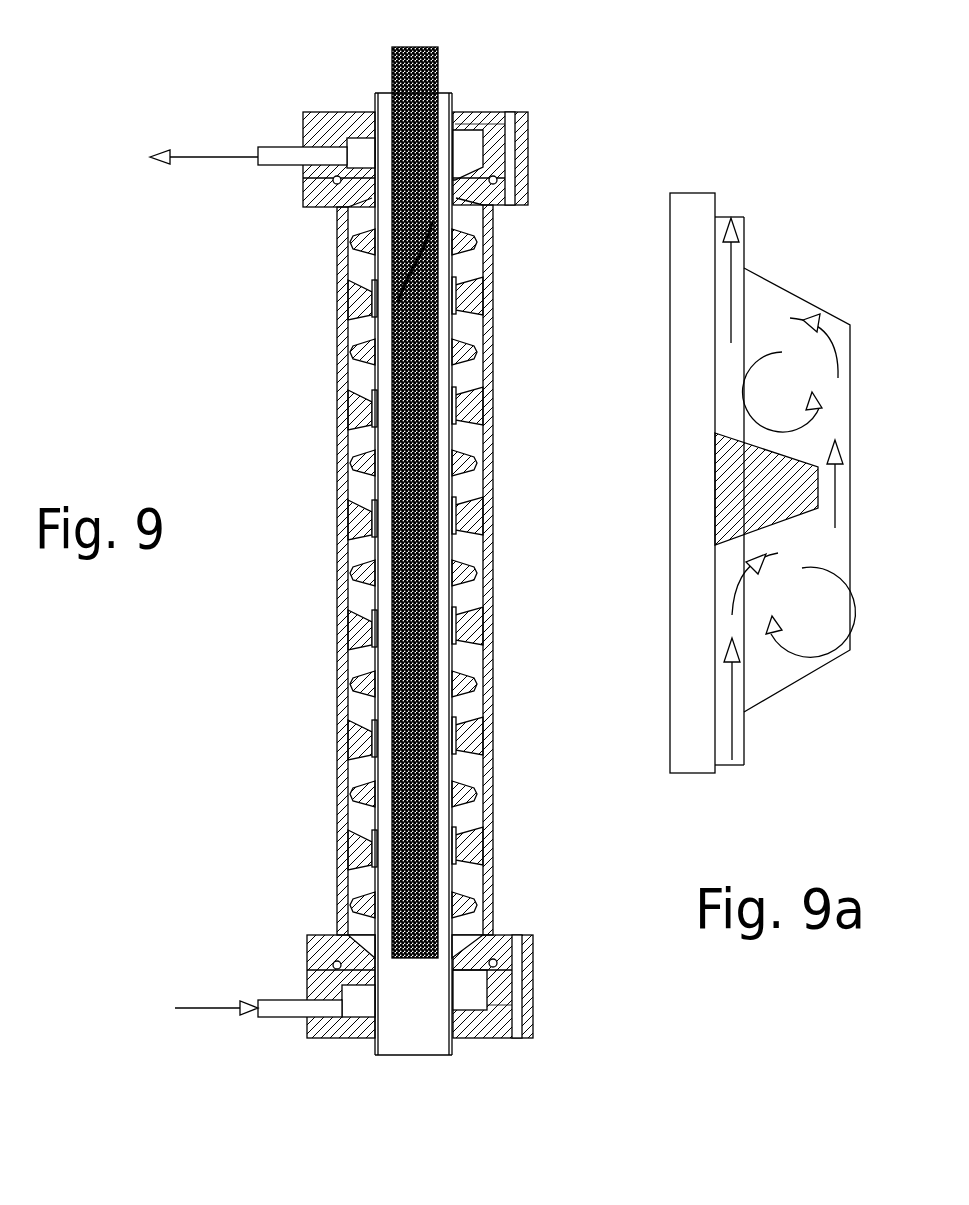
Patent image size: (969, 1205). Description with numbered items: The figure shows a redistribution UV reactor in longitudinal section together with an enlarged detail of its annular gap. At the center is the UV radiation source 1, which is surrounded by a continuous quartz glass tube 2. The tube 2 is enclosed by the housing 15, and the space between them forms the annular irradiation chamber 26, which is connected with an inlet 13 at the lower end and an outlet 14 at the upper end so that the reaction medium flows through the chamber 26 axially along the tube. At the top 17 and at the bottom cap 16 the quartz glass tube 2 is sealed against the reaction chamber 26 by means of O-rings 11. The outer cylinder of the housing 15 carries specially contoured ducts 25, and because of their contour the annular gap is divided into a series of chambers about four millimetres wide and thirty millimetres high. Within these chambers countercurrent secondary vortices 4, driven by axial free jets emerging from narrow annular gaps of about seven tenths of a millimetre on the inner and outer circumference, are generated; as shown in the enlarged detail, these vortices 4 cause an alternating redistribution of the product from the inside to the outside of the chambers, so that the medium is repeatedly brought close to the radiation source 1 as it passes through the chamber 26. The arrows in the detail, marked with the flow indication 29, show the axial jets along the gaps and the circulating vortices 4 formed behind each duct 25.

In FIG. 9, the UV radiation source 1 is at (440, 78).
In FIG. 9, the quartz glass tube 2 is at (452, 104).
In FIG. 9a, the quartz glass tube 2 is at (698, 213).
In FIG. 9a, the countercurrent secondary vortices 4 is at (806, 416).
In FIG. 9, the O-rings 11 is at (376, 122).
In FIG. 9, the inlet 13 is at (305, 993).
In FIG. 9, the outlet 14 is at (303, 150).
In FIG. 9, the housing 15 is at (495, 272).
In FIG. 9, the bottom cap 16 is at (492, 1005).
In FIG. 9, the top 17 is at (456, 124).
In FIG. 9, the ducts 25 is at (495, 376).
In FIG. 9, the irradiation chamber 26 is at (358, 438).
In FIG. 9a, the irradiation chamber 26 is at (845, 543).
In FIG. 9a, the flow channel 29 is at (837, 482).